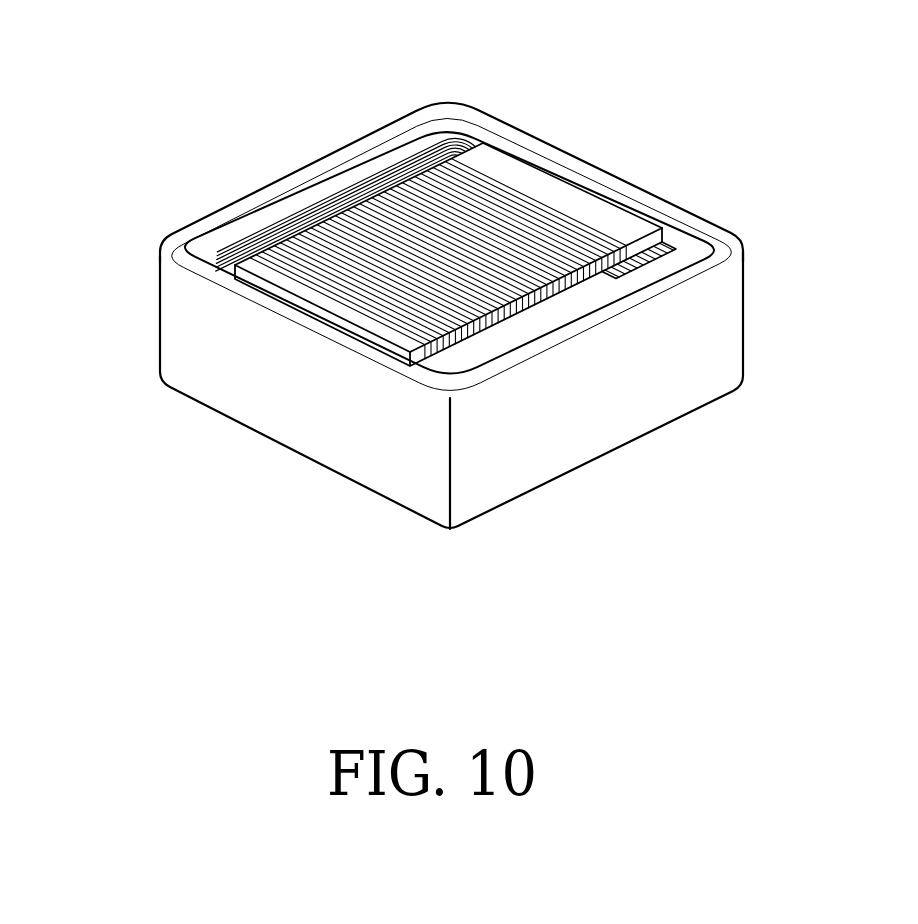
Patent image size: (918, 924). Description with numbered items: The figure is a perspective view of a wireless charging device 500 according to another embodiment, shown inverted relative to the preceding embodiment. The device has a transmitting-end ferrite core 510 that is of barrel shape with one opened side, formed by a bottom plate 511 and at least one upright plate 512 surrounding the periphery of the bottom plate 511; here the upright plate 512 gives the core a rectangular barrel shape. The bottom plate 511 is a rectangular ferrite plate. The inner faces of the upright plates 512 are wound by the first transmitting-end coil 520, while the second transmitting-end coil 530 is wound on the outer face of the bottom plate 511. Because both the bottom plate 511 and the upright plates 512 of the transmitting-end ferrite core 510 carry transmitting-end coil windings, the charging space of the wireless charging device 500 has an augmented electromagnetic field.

The wireless charging device 500 is at (401, 325).
The transmitting-end ferrite core 510 is at (241, 412).
The bottom plate 511 is at (542, 193).
The upright plate 512 is at (187, 227).
The first transmitting-end coil 520 is at (437, 150).
The second transmitting-end coil 530 is at (345, 236).